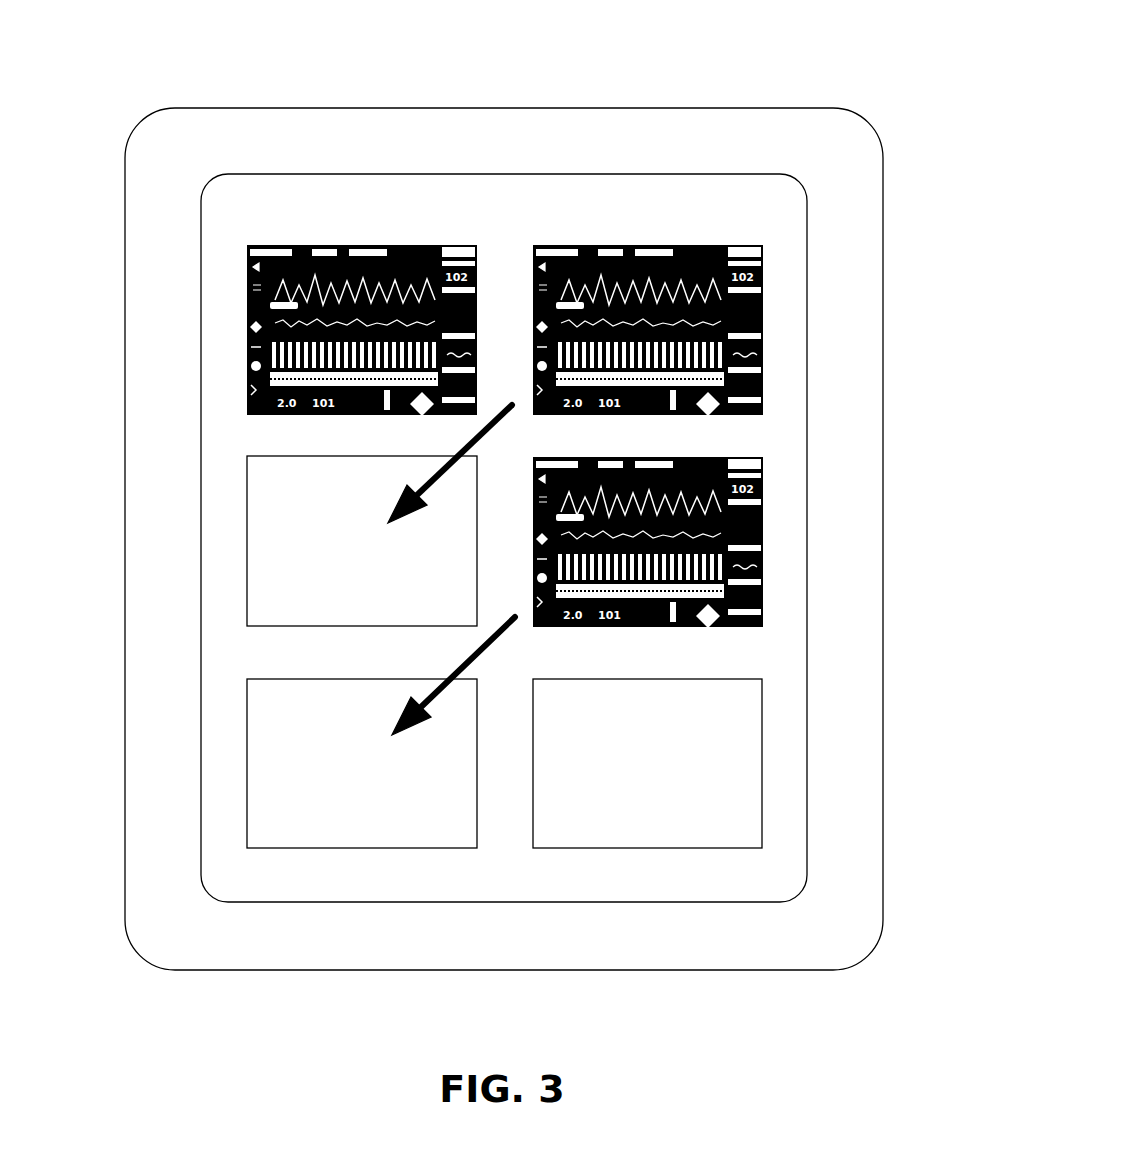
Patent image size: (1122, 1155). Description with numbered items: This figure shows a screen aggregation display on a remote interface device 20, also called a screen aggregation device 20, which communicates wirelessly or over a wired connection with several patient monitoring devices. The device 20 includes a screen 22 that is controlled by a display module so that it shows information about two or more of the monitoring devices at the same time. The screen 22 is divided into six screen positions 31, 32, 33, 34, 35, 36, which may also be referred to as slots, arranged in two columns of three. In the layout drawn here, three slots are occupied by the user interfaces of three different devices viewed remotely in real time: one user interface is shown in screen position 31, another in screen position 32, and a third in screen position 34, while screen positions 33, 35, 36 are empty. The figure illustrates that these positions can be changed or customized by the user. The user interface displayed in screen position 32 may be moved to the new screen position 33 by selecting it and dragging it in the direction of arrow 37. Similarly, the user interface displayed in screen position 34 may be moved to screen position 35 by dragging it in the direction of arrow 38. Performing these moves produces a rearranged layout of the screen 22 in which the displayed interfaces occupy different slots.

The remote interface device 20 is at (310, 113).
The screen 22 is at (440, 177).
The screen position 31 is at (440, 245).
The screen position 32 is at (658, 247).
The screen position 33 is at (243, 595).
The screen position 34 is at (762, 542).
The screen position 35 is at (321, 848).
The screen position 36 is at (672, 848).
The arrow 37 is at (433, 493).
The arrow 38 is at (437, 699).